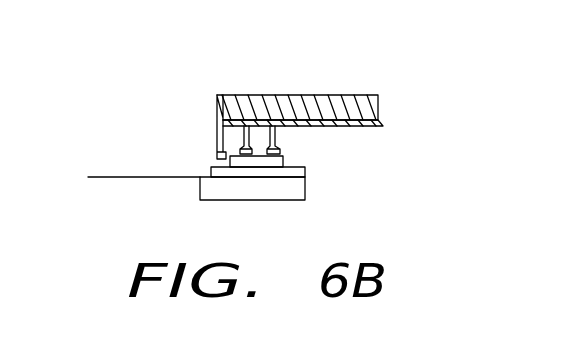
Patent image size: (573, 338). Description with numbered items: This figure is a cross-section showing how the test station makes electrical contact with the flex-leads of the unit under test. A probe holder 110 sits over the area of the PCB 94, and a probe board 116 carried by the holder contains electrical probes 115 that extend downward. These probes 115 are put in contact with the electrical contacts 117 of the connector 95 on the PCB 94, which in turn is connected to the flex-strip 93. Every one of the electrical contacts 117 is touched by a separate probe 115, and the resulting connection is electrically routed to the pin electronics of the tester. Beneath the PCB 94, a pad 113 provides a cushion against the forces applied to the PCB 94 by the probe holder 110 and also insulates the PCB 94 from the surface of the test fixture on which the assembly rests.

The probe holder 110 is at (239, 105).
The probe board 116 is at (383, 125).
The electrical contacts 117 is at (220, 153).
The electrical probes 115 is at (269, 139).
The connector 95 is at (283, 160).
The PCB 94 is at (305, 172).
The pad 113 is at (295, 201).
The flex-strip 93 is at (120, 178).